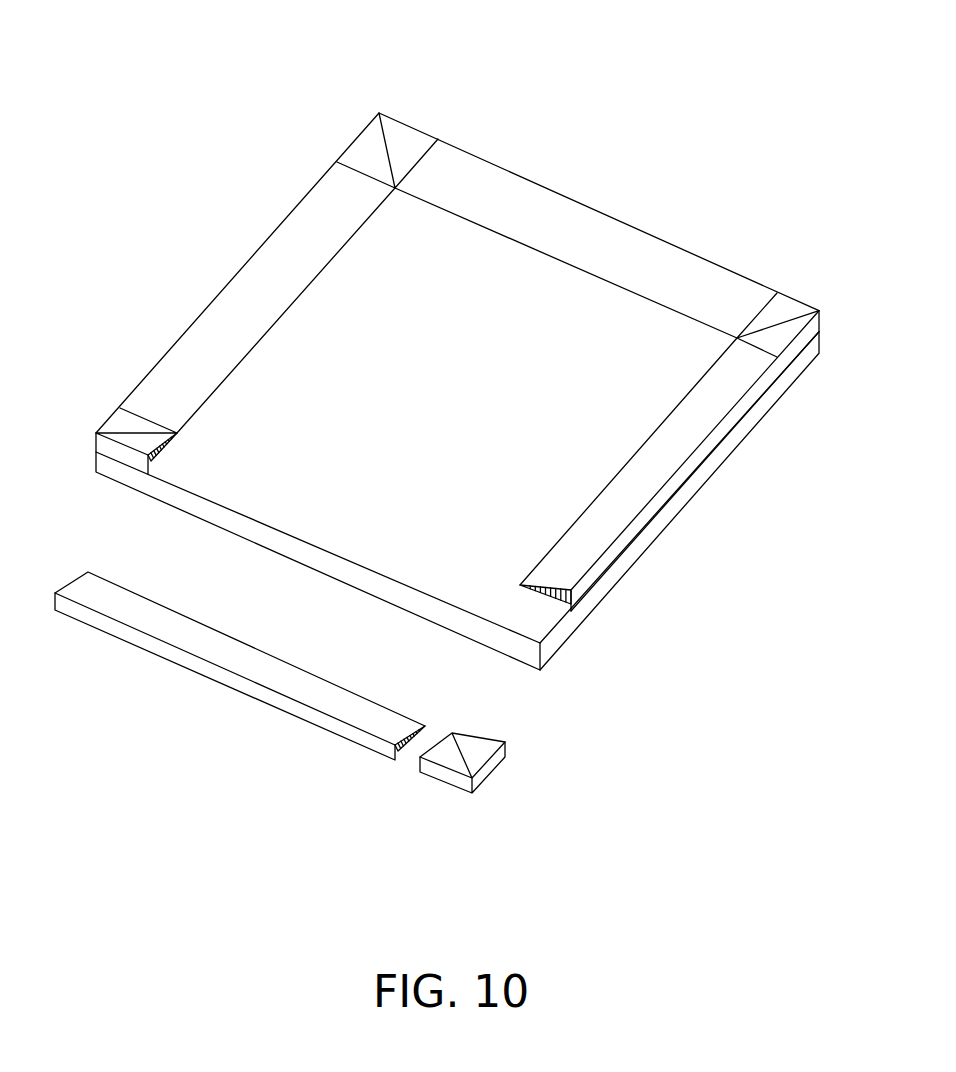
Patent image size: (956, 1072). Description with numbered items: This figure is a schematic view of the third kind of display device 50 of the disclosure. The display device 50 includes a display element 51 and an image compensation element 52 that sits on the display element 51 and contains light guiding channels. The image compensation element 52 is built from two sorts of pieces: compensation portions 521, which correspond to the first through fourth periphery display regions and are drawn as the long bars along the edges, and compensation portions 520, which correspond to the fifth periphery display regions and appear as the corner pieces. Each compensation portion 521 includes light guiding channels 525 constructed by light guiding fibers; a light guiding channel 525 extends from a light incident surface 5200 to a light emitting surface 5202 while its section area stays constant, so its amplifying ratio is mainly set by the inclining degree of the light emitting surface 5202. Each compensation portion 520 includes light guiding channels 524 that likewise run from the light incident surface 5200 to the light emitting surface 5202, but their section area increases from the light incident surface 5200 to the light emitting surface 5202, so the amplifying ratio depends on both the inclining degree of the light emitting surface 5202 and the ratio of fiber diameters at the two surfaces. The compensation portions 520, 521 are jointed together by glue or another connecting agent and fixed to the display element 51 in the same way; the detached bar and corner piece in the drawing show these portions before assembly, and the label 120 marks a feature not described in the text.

The display device 50 is at (297, 73).
The display element 51 is at (447, 615).
The image compensation element 52 is at (828, 226).
The compensation portion 520 is at (783, 310).
The compensation portion 521 is at (712, 295).
The light guiding channel 524 is at (157, 452).
The light guiding channel 525 is at (556, 612).
The light incident surface 5200 is at (537, 594).
The light emitting surface 5202 is at (637, 490).
The inclined surface 120 is at (548, 602).